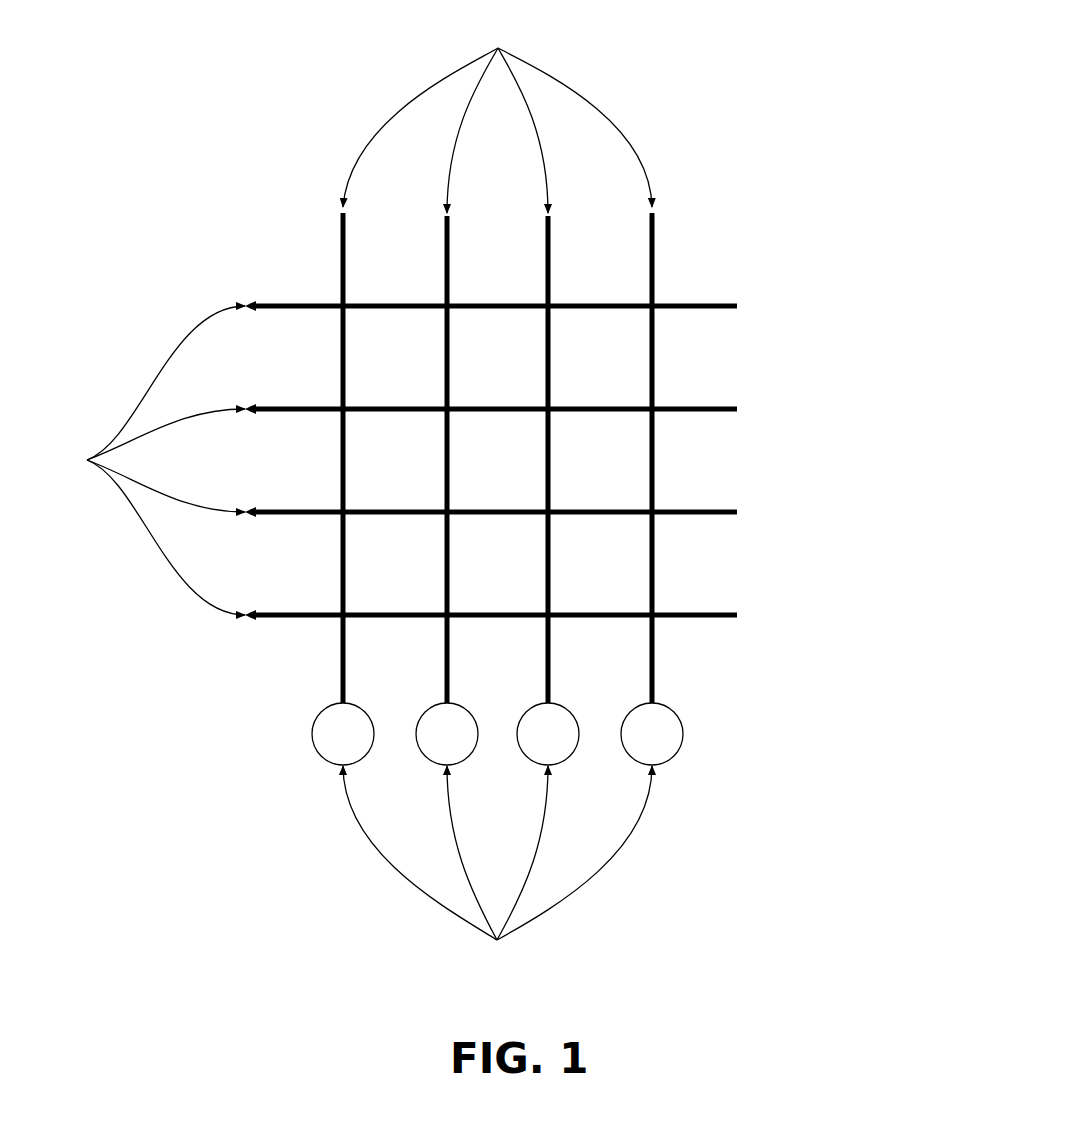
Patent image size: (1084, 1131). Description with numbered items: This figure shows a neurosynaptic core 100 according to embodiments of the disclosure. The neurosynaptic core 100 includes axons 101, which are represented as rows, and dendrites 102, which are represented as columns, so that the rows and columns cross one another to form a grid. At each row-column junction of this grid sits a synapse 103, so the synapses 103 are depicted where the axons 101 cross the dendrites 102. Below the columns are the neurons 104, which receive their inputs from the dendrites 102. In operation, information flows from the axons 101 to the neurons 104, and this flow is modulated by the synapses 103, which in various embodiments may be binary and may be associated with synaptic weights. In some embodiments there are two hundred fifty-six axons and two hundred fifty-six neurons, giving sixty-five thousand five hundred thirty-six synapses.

The neurosynaptic core 100 is at (243, 137).
The axons 101 is at (144, 460).
The dendrites 102 is at (497, 113).
The synapses 103 is at (663, 293).
The neurons 104 is at (497, 843).